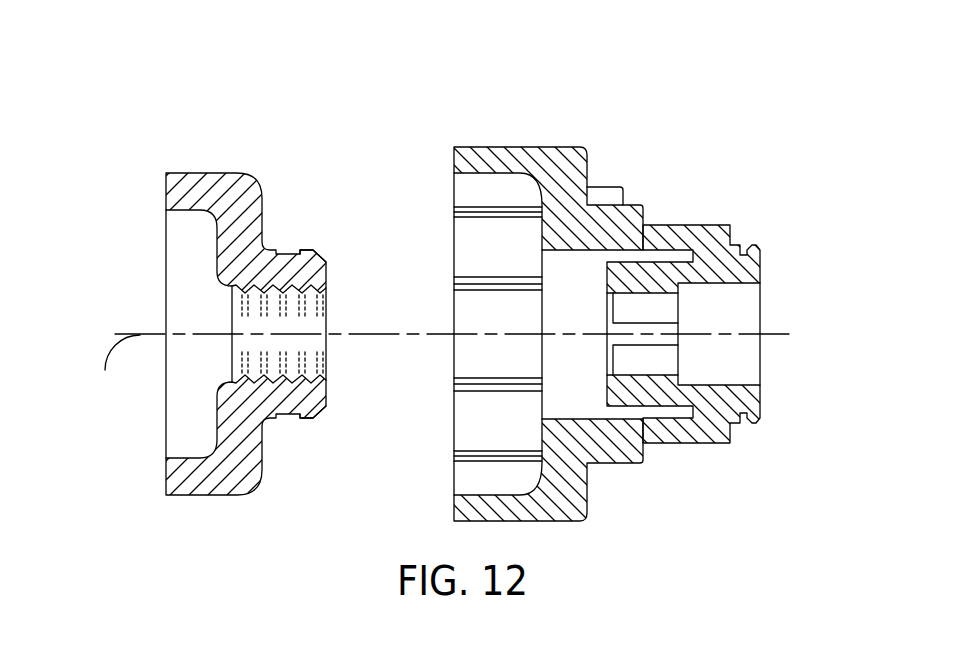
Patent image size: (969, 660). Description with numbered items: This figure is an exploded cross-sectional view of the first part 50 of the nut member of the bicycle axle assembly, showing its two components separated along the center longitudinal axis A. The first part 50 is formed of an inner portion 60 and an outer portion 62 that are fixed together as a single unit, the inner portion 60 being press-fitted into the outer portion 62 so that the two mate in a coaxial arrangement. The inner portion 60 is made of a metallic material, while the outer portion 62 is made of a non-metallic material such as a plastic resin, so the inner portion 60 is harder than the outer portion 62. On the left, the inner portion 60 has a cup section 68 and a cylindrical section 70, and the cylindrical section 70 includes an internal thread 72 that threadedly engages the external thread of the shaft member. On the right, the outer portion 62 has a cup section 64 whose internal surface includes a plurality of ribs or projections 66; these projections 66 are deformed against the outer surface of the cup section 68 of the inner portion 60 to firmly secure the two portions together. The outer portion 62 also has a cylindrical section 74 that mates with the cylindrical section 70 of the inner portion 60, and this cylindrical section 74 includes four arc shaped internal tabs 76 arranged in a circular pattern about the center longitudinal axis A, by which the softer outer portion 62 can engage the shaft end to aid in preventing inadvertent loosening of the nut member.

The first part 50 is at (472, 78).
The inner portion 60 is at (280, 126).
The outer portion 62 is at (480, 126).
The cup section 64 is at (562, 162).
The projections 66 is at (473, 398).
The cup section 68 is at (195, 172).
The cylindrical section 70 is at (307, 249).
The internal thread 72 is at (328, 318).
The cylindrical section 74 is at (747, 268).
The arc shaped internal tabs 76 is at (643, 375).
The center longitudinal axis A is at (112, 360).